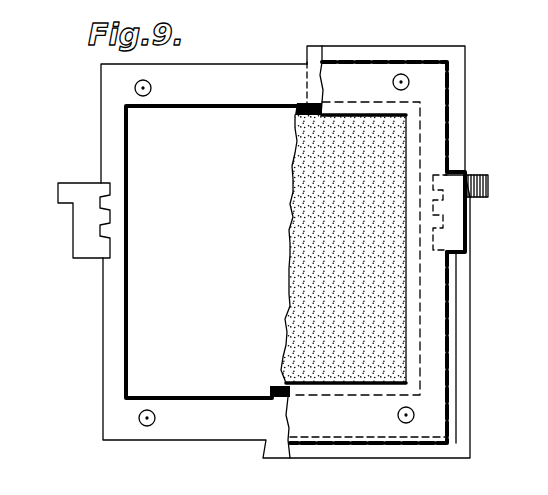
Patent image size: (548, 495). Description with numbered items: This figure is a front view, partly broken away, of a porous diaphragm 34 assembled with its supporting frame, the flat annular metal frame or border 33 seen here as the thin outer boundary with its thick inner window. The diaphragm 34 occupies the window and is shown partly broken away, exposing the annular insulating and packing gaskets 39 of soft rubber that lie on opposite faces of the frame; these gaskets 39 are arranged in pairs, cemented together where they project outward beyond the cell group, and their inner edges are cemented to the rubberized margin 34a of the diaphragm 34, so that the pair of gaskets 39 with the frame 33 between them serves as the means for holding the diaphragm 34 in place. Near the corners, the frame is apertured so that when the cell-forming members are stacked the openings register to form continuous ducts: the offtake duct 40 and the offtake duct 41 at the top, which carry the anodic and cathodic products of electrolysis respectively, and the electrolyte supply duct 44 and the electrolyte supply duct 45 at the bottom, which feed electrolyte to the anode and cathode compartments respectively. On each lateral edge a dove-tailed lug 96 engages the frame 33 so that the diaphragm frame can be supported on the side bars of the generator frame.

The frame 33 is at (103, 319).
The porous diaphragm 34 is at (393, 160).
The rubberized margin of the diaphragm 34a is at (275, 392).
The cemented gaskets 39 is at (318, 57).
The offtake duct 40 is at (133, 89).
The offtake duct 41 is at (406, 75).
The electrolyte supply duct 44 is at (415, 412).
The electrolyte supply duct 45 is at (145, 427).
The dove-tailed lug 96 is at (78, 235).